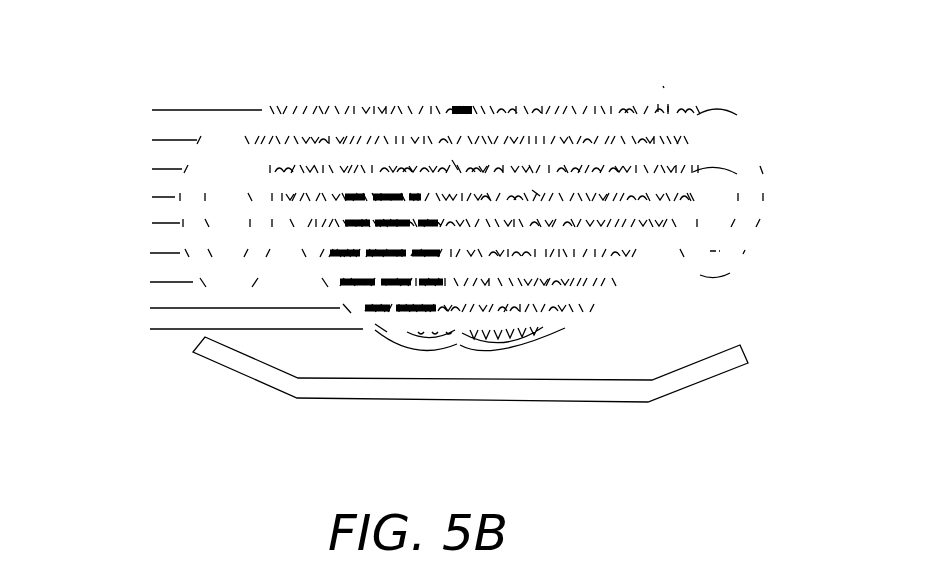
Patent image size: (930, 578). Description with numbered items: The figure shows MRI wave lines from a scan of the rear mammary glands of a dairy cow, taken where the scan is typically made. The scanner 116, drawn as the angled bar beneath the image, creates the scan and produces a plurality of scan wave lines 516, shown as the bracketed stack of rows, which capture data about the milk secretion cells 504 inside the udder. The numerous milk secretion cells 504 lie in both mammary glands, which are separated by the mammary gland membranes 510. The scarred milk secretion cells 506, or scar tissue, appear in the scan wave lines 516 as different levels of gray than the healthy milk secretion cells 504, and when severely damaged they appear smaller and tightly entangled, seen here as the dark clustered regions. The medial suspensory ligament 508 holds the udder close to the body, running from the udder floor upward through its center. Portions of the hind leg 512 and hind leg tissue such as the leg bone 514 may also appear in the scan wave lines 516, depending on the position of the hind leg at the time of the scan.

The scanner 116 is at (473, 402).
The milk secretion cells 504 is at (537, 192).
The scarred milk secretion cells 506 is at (385, 226).
The medial suspensory ligament 508 is at (466, 107).
The mammary gland membranes 510 is at (458, 163).
The hind leg 512 is at (753, 145).
The leg bone 514 is at (712, 192).
The scan wave lines 516 is at (135, 112).